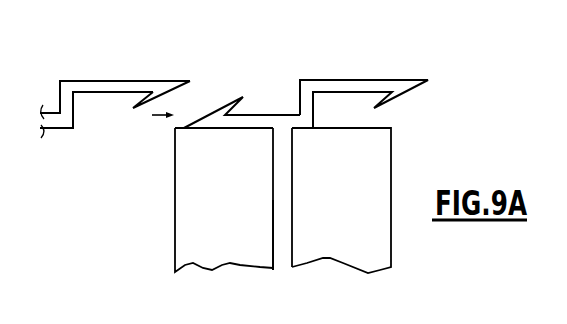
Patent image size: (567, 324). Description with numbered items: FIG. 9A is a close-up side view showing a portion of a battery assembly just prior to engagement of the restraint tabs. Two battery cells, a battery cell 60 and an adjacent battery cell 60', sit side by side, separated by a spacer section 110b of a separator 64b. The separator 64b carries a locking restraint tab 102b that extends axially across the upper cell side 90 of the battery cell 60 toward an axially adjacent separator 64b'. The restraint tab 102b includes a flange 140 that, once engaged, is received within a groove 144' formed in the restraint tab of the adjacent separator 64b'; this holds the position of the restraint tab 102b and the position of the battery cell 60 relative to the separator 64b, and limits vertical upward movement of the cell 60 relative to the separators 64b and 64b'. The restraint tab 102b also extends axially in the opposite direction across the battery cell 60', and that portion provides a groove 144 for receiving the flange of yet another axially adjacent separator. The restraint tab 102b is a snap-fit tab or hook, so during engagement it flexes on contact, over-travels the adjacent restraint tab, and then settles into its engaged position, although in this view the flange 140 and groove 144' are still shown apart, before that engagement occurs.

The battery cell 60 is at (224, 200).
The battery cell 60' is at (341, 200).
The separator 64b is at (315, 250).
The axially adjacent separator 64b' is at (96, 128).
The upper cell side 90 is at (257, 128).
The restraint tab 102b is at (279, 120).
The spacer section 110b is at (284, 193).
The flange 140 is at (232, 102).
The groove 144 is at (364, 83).
The groove 144' is at (134, 128).